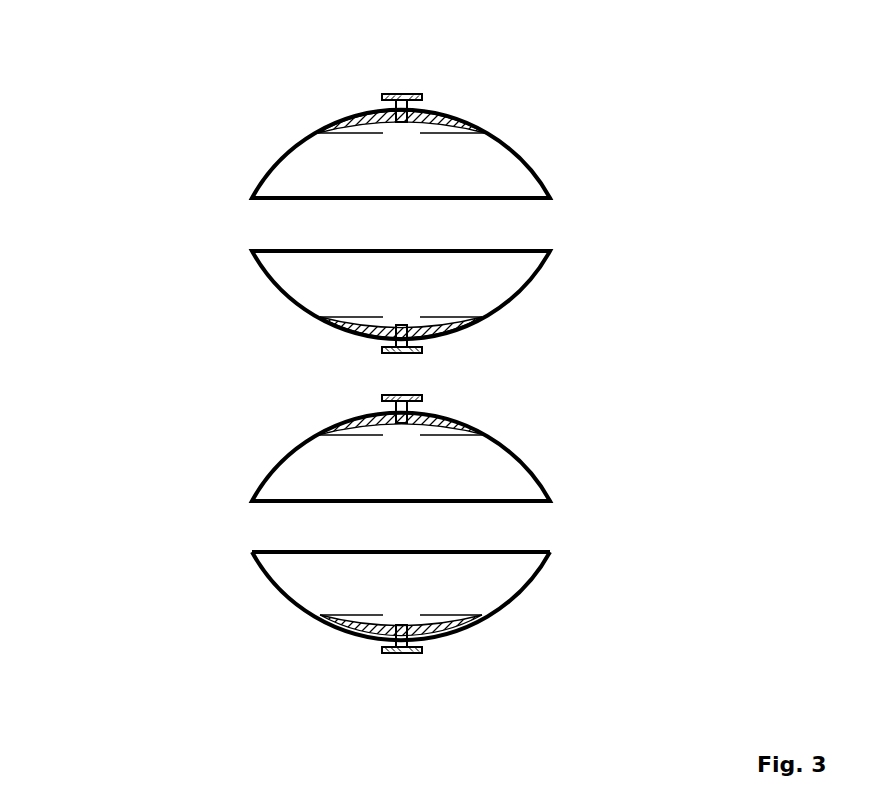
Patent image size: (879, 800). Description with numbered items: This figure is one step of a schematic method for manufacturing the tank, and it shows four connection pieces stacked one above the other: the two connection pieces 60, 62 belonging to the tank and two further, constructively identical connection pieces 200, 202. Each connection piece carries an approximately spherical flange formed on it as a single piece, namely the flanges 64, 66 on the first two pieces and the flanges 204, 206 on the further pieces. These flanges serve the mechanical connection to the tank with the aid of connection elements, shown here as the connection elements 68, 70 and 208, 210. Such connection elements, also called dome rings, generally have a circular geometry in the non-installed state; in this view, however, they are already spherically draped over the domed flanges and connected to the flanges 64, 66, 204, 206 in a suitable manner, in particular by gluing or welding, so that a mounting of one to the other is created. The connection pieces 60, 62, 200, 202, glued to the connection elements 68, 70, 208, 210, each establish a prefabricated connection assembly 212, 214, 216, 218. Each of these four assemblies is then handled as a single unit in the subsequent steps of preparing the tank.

The connection piece 60 is at (372, 72).
The connection piece 62 is at (428, 347).
The flange 64 is at (447, 121).
The flange 66 is at (362, 334).
The connection element 68 is at (285, 155).
The connection element 70 is at (284, 293).
The prefabricated connection assembly 212 is at (418, 150).
The prefabricated connection assembly 214 is at (418, 327).
The connection piece 200 is at (350, 395).
The connection piece 202 is at (450, 652).
The flange 204 is at (432, 414).
The flange 206 is at (272, 580).
The connection element 208 is at (518, 458).
The connection element 210 is at (530, 583).
The prefabricated connection assembly 216 is at (418, 453).
The prefabricated connection assembly 218 is at (418, 624).